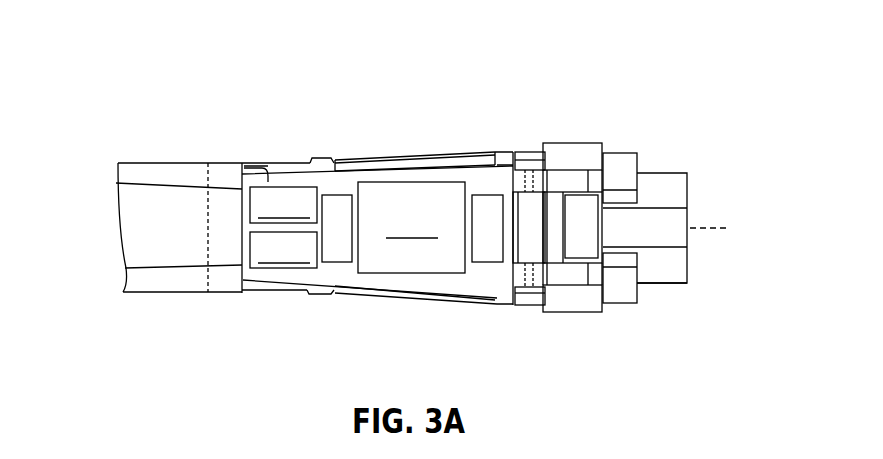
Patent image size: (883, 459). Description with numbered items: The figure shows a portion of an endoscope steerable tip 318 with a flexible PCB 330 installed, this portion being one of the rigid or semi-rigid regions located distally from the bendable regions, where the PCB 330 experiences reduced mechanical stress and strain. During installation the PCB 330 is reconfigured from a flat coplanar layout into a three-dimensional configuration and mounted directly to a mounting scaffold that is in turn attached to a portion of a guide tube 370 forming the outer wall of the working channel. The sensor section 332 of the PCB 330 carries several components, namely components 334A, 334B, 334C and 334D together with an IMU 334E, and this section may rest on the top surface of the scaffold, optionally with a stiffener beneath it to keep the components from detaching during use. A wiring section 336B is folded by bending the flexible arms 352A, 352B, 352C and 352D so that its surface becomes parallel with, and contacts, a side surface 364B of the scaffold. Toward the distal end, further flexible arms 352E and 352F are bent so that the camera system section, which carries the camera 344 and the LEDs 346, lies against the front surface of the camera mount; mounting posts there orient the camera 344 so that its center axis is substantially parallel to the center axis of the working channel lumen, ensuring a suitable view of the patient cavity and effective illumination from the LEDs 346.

The endoscope steerable tip 318 is at (790, 105).
The flexible PCB 330 is at (283, 278).
The sensor section 332 is at (202, 168).
The component 334A is at (283, 250).
The component 334B is at (283, 205).
The component 334C is at (336, 212).
The component 334D is at (487, 256).
The IMU 334E is at (411, 227).
The wiring section 336B is at (470, 152).
The camera 344 is at (668, 218).
The LEDs 346 is at (631, 155).
The flexible arm 352A is at (317, 293).
The flexible arm 352B is at (502, 304).
The flexible arm 352C is at (322, 162).
The flexible arm 352D is at (503, 155).
The flexible arm 352E is at (563, 278).
The flexible arm 352F is at (568, 175).
The side surface 364B is at (273, 160).
The guide tube 370 is at (667, 280).